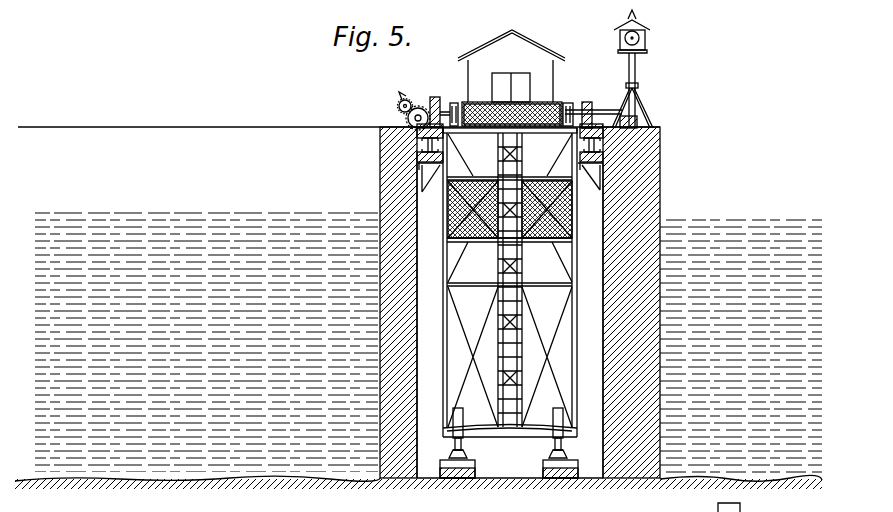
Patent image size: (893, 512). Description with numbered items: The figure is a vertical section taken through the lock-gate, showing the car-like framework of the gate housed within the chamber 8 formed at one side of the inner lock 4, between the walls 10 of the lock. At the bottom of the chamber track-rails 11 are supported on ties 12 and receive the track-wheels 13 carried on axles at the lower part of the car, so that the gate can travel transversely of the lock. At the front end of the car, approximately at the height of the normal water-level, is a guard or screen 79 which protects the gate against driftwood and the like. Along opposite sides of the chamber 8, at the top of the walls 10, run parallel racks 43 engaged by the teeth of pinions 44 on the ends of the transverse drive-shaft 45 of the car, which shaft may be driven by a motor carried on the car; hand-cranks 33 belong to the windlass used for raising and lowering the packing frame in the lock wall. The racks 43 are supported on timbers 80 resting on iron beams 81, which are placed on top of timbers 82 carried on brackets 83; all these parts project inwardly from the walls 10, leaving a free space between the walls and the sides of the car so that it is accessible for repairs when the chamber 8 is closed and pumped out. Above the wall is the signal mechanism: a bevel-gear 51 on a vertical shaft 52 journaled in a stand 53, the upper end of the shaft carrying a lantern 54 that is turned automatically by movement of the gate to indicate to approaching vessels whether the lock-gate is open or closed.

The inner lock 4 is at (510, 282).
The chamber 8 is at (510, 320).
The wall of the lock 10 is at (387, 173).
The track-rails 11 is at (453, 453).
The ties 12 is at (475, 465).
The track-wheels 13 is at (550, 445).
The hand-cranks 33 is at (400, 113).
The racks 43 is at (380, 142).
The pinions 44 is at (437, 100).
The transverse drive-shaft 45 is at (580, 112).
The bevel-gear 51 is at (645, 129).
The vertical shaft 52 is at (635, 68).
The stand 53 is at (650, 113).
The lantern 54 is at (645, 38).
The guard or screen 79 is at (578, 242).
The timbers 80 is at (605, 133).
The iron beams 81 is at (603, 141).
The timbers 82 is at (603, 149).
The brackets 83 is at (600, 187).